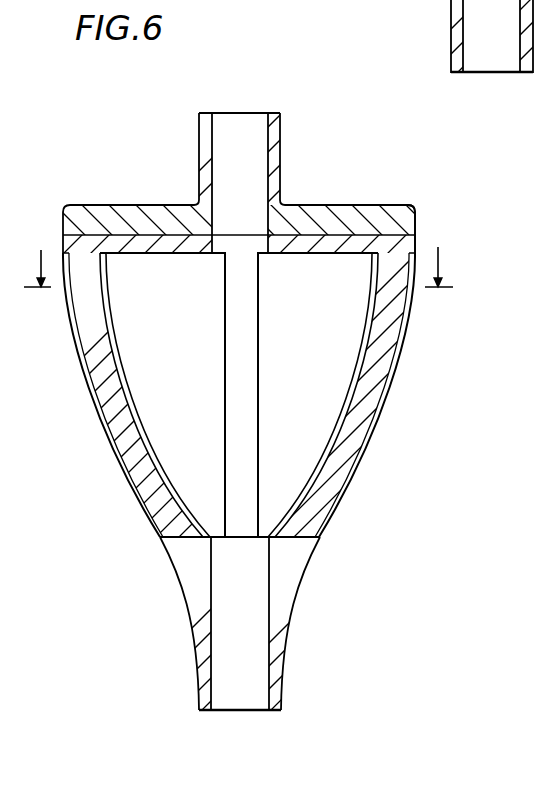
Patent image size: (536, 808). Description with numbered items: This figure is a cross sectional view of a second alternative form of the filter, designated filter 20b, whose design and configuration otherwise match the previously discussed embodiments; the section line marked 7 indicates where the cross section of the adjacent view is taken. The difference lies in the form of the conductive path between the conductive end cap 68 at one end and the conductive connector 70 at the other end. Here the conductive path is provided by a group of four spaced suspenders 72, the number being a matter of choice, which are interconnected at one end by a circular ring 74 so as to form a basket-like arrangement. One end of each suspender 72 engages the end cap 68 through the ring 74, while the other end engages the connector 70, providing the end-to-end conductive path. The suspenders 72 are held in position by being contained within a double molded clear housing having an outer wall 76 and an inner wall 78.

The filter 20b is at (431, 364).
The end cap 68 is at (301, 206).
The circular ring 74 is at (396, 248).
The section line 7- 7 is at (238, 250).
The suspenders 72 is at (358, 430).
The outer wall 76 is at (395, 393).
The inner wall 78 is at (358, 347).
The conductive connector 70 is at (280, 613).